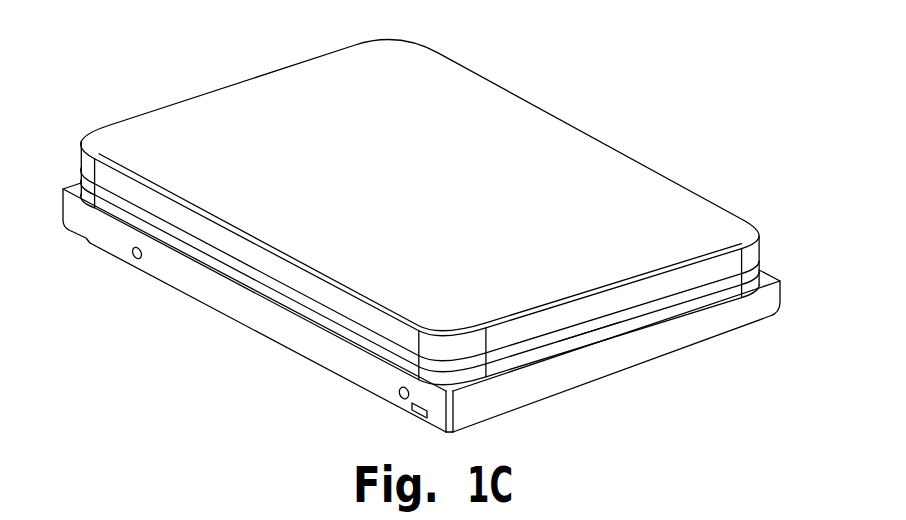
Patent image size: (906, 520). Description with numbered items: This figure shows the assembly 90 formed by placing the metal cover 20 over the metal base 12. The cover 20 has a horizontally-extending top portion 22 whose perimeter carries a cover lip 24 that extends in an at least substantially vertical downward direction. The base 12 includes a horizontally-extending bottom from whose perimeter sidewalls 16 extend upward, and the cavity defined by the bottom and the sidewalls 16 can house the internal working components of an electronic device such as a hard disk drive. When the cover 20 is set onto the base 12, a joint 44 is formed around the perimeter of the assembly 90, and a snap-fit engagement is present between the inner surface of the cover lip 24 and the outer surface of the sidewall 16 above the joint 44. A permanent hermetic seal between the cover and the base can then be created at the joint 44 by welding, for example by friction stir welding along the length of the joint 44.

The assembly 90 is at (590, 75).
The horizontally-extending top portion 22 is at (394, 185).
The metal cover 20 is at (692, 226).
The cover lip 24 is at (104, 177).
The metal base 12 is at (720, 322).
The sidewalls 16 is at (176, 238).
The joint 44 is at (588, 344).